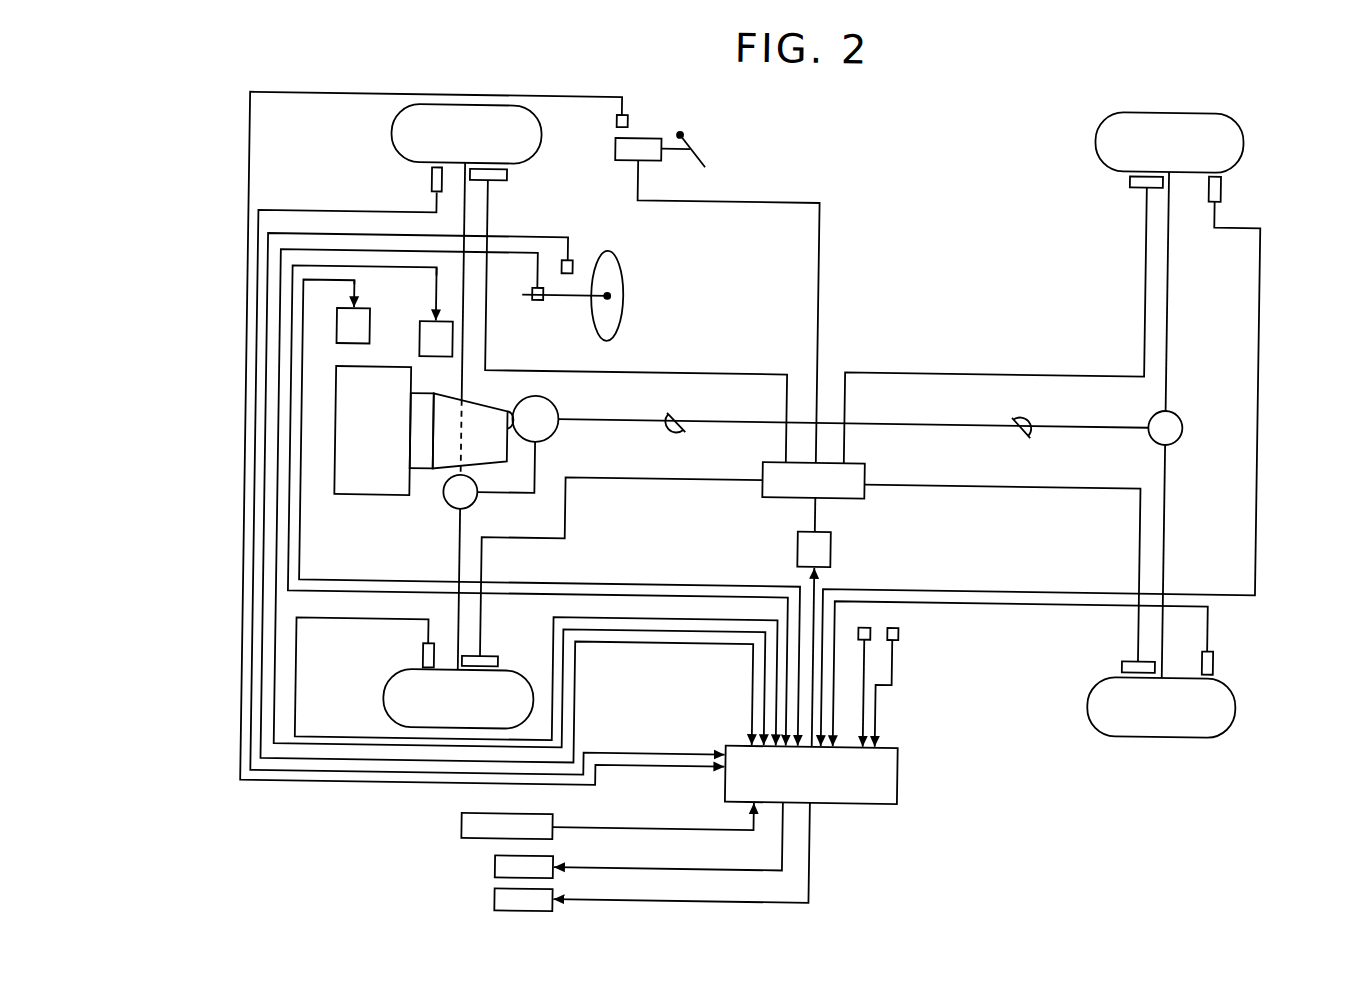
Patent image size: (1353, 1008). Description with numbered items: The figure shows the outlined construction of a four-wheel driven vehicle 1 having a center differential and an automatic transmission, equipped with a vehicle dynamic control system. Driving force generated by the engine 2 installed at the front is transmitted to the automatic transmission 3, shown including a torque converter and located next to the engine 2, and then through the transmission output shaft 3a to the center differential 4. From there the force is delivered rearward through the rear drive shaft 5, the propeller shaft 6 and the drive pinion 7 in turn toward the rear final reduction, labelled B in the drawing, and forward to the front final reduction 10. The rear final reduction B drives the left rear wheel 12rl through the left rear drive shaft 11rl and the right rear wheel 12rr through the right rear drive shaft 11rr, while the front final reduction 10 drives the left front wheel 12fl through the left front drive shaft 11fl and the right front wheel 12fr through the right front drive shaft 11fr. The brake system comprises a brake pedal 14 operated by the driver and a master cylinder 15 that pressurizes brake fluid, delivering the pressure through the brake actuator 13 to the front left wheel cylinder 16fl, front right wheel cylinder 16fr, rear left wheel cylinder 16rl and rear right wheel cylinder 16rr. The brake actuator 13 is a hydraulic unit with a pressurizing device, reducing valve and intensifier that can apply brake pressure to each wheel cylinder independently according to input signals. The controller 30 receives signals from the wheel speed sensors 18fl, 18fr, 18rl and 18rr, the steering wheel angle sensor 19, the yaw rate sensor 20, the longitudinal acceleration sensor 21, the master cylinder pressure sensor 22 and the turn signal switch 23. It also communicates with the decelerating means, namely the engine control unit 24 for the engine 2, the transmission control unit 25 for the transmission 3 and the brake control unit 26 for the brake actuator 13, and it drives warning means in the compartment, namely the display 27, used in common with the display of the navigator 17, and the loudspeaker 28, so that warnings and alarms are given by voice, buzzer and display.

The vehicle 1 is at (902, 181).
The engine 2 is at (368, 503).
The automatic transmission 3 is at (500, 466).
The transmission output shaft 3a is at (509, 416).
The center differential 4 is at (552, 409).
The rear drive shaft 5 is at (612, 430).
The propeller shaft 6 is at (928, 427).
The drive pinion 7 is at (1083, 425).
The rear differential B is at (1153, 411).
The front final reduction 10 is at (447, 507).
The right front drive shaft 11fr is at (462, 216).
The left front drive shaft 11fl is at (459, 568).
The right rear drive shaft 11rr is at (1166, 289).
The left rear drive shaft 11rl is at (1169, 509).
The right front wheel 12fr is at (387, 139).
The left front wheel 12fl is at (387, 703).
The right rear wheel 12rr is at (1241, 134).
The left rear wheel 12rl is at (1243, 700).
The brake actuator 13 is at (846, 497).
The brake pedal 14 is at (688, 149).
The master cylinder 15 is at (646, 163).
The front right wheel cylinder 16fr is at (504, 178).
The front left wheel cylinder 16fl is at (521, 645).
The rear right wheel cylinder 16rr is at (1126, 177).
The rear left wheel cylinder 16rl is at (1125, 660).
The navigator 17 is at (467, 830).
The wheel speed sensor 18fr is at (428, 185).
The wheel speed sensor 18fl is at (426, 660).
The wheel speed sensor 18rr is at (1217, 183).
The wheel speed sensor 18rl is at (1219, 652).
The steering wheel angle sensor 19 is at (535, 303).
The yaw rate sensor 20 is at (871, 626).
The longitudinal acceleration sensor 21 is at (901, 633).
The master cylinder pressure sensor 22 is at (623, 123).
The turn signal switch 23 is at (572, 262).
The engine control unit 24 is at (335, 325).
The transmission control unit 25 is at (418, 343).
The brake control unit 26 is at (799, 549).
The display 27 is at (501, 870).
The loudspeaker 28 is at (501, 903).
The controller 30 is at (902, 775).